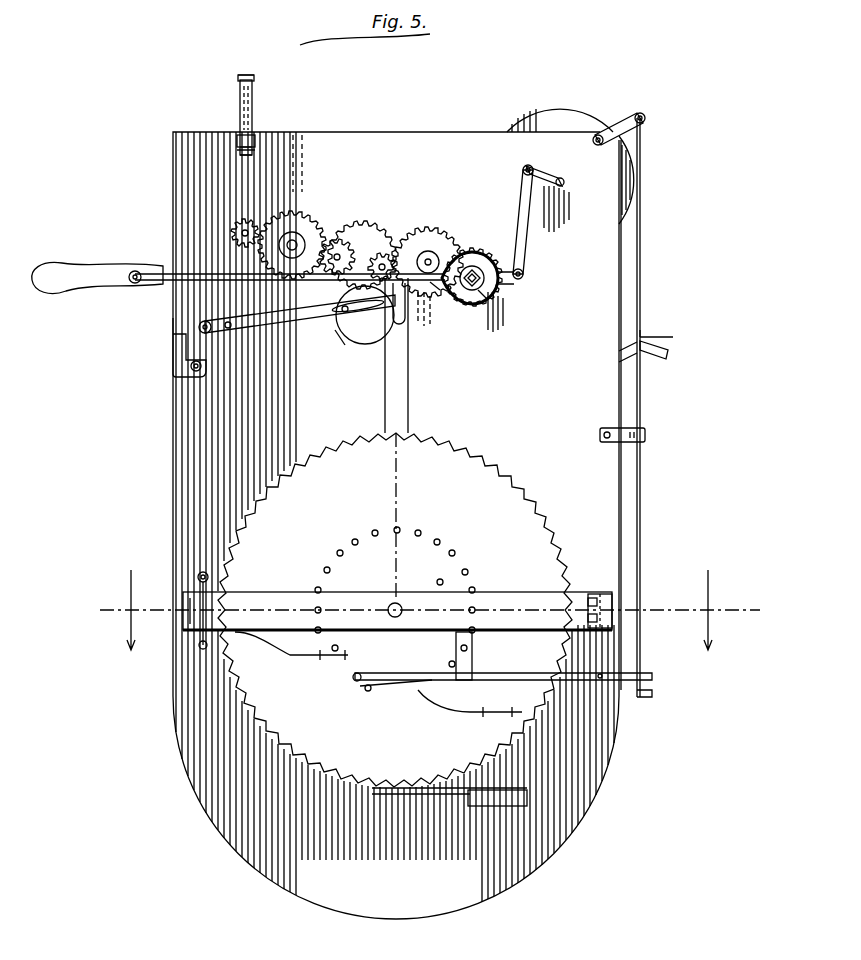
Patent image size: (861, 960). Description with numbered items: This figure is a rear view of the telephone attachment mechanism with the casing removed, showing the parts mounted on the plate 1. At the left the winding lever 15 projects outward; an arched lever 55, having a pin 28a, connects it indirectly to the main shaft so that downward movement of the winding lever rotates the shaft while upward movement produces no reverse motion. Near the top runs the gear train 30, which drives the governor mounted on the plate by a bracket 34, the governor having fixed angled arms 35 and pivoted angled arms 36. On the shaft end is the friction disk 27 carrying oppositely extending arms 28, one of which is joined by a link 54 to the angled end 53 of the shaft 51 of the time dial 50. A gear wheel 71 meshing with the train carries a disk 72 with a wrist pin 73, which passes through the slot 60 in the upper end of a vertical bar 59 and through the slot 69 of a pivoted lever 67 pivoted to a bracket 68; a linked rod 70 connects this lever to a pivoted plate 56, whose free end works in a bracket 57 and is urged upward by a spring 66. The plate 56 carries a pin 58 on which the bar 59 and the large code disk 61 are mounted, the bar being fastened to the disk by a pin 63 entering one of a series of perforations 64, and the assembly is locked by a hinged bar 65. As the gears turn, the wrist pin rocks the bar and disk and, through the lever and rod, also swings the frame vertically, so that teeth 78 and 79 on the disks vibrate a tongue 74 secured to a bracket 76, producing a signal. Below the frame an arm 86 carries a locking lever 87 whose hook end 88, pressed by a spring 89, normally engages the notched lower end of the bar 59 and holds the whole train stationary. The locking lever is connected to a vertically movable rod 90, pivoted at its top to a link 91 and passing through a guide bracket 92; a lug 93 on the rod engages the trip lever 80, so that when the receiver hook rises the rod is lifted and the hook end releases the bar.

The plate 1 is at (272, 816).
The winding lever 15 is at (72, 270).
The friction disk 27 is at (483, 287).
The arms 28 is at (484, 288).
The pin 28a is at (433, 290).
The gear train 30 is at (372, 230).
The bracket 34 is at (240, 113).
The angled arms 35 is at (238, 82).
The angled arms 36 is at (254, 111).
The time dial 50 is at (541, 110).
The shaft 51 is at (568, 190).
The angled end 53 is at (546, 172).
The link 54 is at (523, 195).
The arched lever 55 is at (236, 283).
The plate 56 is at (613, 606).
The bracket 57 is at (210, 582).
The pin 58 is at (442, 580).
The bar 59 is at (397, 424).
The slot 60 is at (382, 345).
The disk 61 is at (395, 610).
The pin 63 is at (372, 530).
The perforations 64 is at (355, 546).
The hinged bar 65 is at (562, 608).
The spring 66 is at (295, 660).
The pivoted lever 67 is at (272, 340).
The bracket 68 is at (176, 348).
The slot 69 is at (340, 315).
The linked rod 70 is at (236, 471).
The gear wheel 71 is at (348, 340).
The disk 72 is at (330, 298).
The wrist pin 73 is at (407, 312).
The tongue 74 is at (422, 796).
The bracket 76 is at (506, 807).
The teeth 78 is at (262, 712).
The teeth 79 is at (298, 746).
The trip lever 80 is at (658, 353).
The arm 86 is at (475, 652).
The locking lever 87 is at (600, 681).
The hook end 88 is at (362, 700).
The spring 89 is at (437, 713).
The rod 90 is at (642, 520).
The link 91 is at (633, 114).
The guide bracket 92 is at (612, 440).
The lug 93 is at (670, 337).